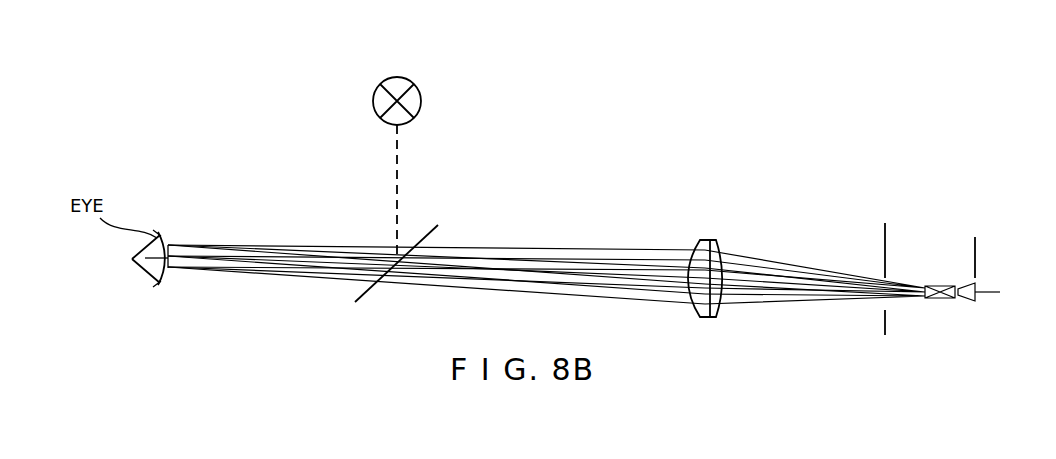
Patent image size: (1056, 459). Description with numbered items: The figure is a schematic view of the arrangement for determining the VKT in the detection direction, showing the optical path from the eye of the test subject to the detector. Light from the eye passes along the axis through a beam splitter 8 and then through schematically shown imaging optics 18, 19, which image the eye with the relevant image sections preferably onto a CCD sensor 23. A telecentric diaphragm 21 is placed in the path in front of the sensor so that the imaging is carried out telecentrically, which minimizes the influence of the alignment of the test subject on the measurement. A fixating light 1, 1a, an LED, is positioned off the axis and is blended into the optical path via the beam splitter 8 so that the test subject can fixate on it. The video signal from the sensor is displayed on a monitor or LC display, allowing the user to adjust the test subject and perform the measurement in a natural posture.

The fixating light 1 is at (424, 147).
The fixating light 1a is at (413, 80).
The beam splitter 8 is at (365, 298).
The imaging optics 18 is at (700, 250).
The imaging optics 19 is at (705, 240).
The telecentric diaphragm 21 is at (885, 232).
The CCD sensor 23 is at (975, 252).